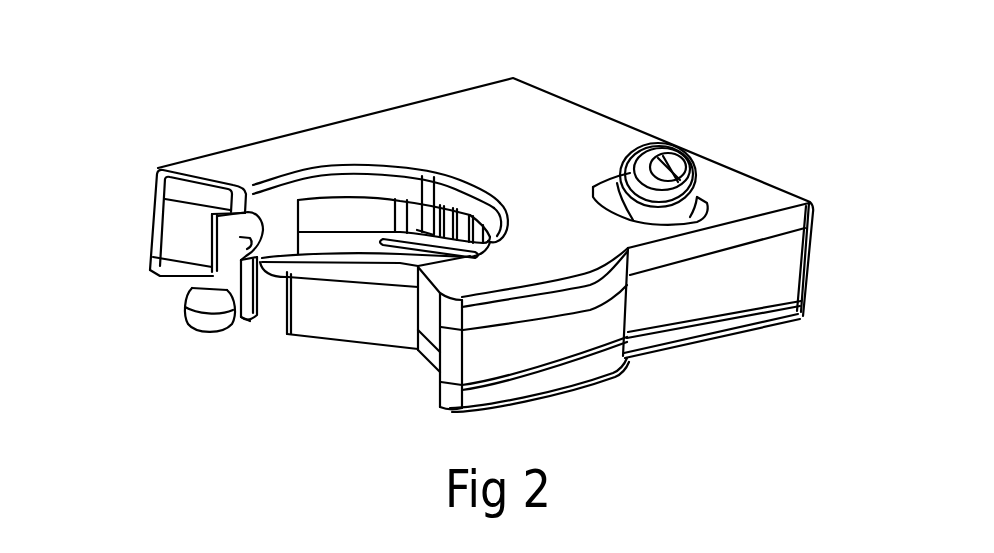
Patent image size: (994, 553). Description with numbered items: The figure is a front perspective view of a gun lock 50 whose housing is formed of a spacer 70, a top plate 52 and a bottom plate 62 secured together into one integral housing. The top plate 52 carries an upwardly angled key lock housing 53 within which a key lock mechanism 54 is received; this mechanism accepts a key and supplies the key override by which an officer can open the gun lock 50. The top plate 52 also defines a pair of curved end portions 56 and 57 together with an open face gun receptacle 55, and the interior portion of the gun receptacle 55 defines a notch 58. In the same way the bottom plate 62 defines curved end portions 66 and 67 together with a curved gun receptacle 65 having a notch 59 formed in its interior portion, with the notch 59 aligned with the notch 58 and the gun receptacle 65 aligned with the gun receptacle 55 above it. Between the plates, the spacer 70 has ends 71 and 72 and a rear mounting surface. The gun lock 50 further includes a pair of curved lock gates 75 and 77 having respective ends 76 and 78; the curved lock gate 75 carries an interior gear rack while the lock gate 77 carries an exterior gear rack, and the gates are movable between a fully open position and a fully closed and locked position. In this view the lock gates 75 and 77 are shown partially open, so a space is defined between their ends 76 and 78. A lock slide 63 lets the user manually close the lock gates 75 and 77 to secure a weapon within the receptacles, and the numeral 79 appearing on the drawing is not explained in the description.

The gun lock 50 is at (620, 78).
The top plate 52 is at (662, 152).
The key lock housing 53 is at (615, 176).
The key lock mechanism 54 is at (687, 171).
The gun receptacle 55 is at (333, 187).
The curved end portion 56 is at (432, 302).
The curved end portion 57 is at (183, 195).
The notch 58 is at (456, 194).
The notch 59 is at (426, 261).
The bottom plate 62 is at (548, 397).
The lock slide 63 is at (185, 317).
The gun receptacle 65 is at (340, 263).
The curved end portion 66 is at (437, 380).
The curved end portion 67 is at (180, 269).
The spacer 70 is at (663, 303).
The end 71 is at (433, 360).
The end 72 is at (190, 225).
The curved lock gate 75 is at (227, 277).
The end 76 is at (251, 321).
The lock gate 77 is at (340, 338).
The end 78 is at (285, 323).
The right side edge 79 is at (808, 268).